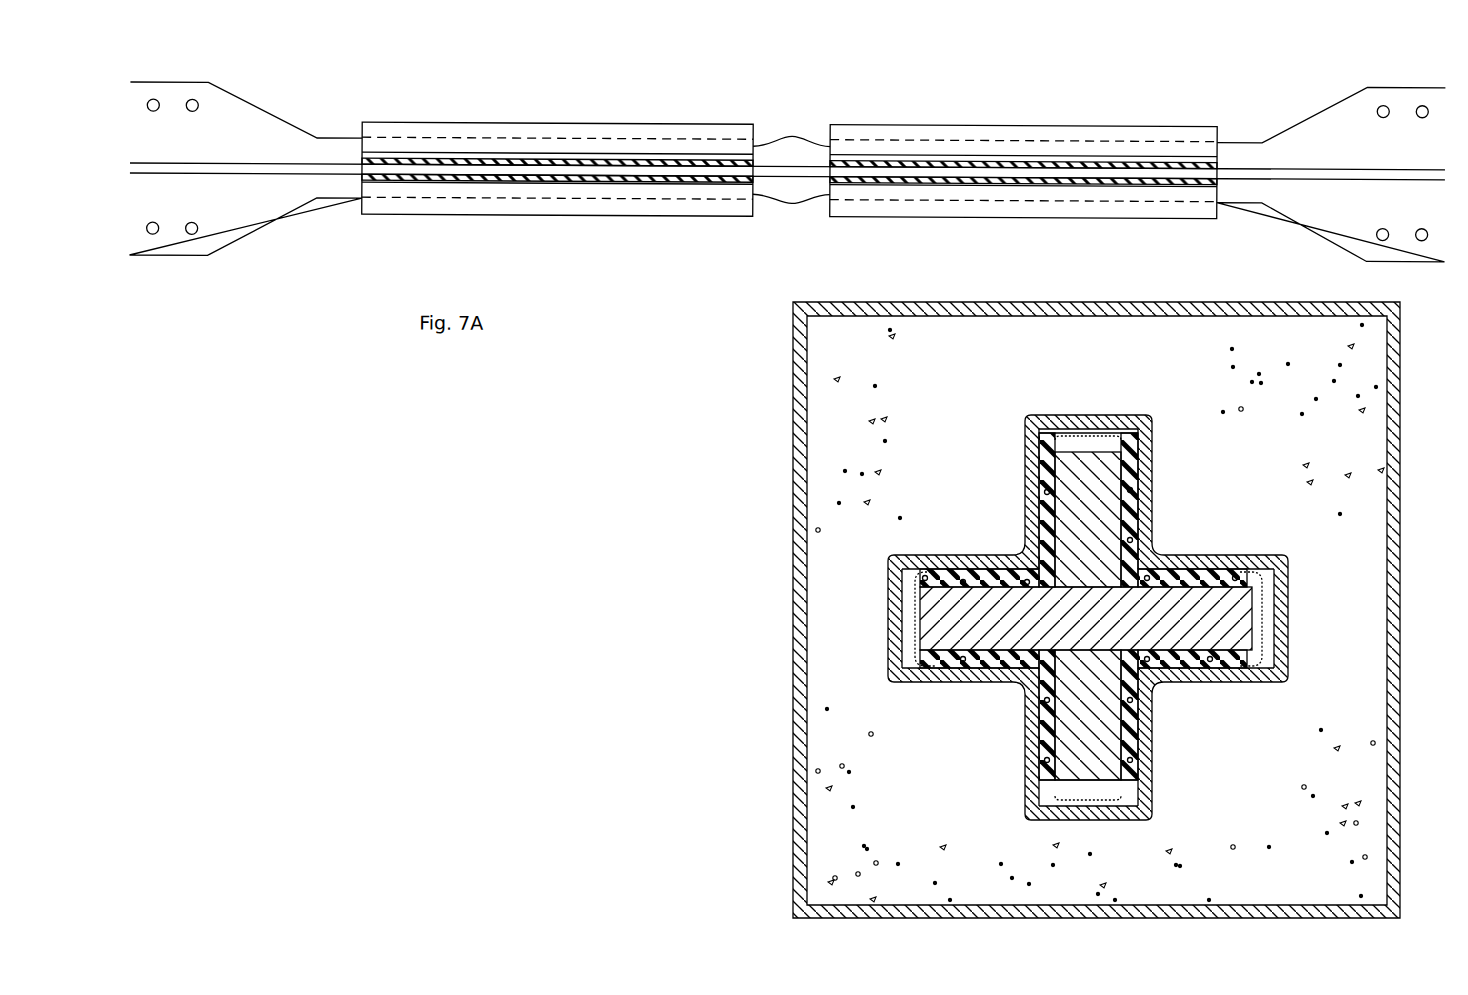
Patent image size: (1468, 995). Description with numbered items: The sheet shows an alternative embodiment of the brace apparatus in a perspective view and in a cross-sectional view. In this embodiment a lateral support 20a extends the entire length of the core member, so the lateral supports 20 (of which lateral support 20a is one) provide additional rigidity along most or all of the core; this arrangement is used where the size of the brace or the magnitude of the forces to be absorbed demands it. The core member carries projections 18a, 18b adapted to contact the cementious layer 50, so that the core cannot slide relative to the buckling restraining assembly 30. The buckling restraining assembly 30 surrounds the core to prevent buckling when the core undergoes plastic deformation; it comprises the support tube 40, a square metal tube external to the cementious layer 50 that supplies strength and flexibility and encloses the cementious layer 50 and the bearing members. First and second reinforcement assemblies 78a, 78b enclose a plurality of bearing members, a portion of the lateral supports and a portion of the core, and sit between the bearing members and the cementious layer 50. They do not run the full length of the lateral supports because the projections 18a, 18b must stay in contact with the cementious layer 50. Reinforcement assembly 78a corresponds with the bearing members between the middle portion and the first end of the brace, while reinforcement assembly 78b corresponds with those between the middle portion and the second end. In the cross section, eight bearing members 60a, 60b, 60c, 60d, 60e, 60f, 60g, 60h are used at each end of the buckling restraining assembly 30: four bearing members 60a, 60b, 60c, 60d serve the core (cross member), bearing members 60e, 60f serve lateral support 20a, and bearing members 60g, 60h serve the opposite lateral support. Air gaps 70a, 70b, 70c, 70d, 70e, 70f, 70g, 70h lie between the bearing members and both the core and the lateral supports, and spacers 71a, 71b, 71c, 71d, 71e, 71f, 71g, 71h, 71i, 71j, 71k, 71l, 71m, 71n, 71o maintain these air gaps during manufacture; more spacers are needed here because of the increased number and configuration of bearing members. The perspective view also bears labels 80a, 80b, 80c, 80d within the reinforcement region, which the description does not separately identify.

In FIG. 7A, the projection 18a is at (793, 133).
In FIG. 7A, the projection 18b is at (790, 199).
In FIG. 7B, the core bar 20 is at (1072, 468).
In FIG. 7A, the lateral support 20a is at (1322, 166).
In FIG. 7B, the buckling restraining assembly 30 is at (775, 372).
In FIG. 7B, the support tube 40 is at (940, 300).
In FIG. 7B, the cementious layer 50 is at (1282, 325).
In FIG. 7A, the bearing member 60a is at (624, 157).
In FIG. 7B, the bearing member 60a is at (922, 560).
In FIG. 7A, the bearing member 60b is at (632, 180).
In FIG. 7B, the bearing member 60b is at (972, 670).
In FIG. 7A, the bearing member 60c is at (1001, 158).
In FIG. 7B, the bearing member 60c is at (1228, 558).
In FIG. 7A, the bearing member 60d is at (1110, 178).
In FIG. 7B, the bearing member 60d is at (1288, 650).
In FIG. 7B, the bearing member 60e is at (1046, 455).
In FIG. 7B, the bearing member 60f is at (1142, 460).
In FIG. 7B, the bearing member 60g is at (1152, 740).
In FIG. 7B, the bearing member 60h is at (1033, 740).
In FIG. 7B, the air gap 70a is at (890, 557).
In FIG. 7B, the air gap 70b is at (888, 678).
In FIG. 7B, the air gap 70c is at (1290, 578).
In FIG. 7B, the air gap 70d is at (1262, 625).
In FIG. 7B, the air gap 70e is at (1046, 458).
In FIG. 7B, the air gap 70f is at (1133, 445).
In FIG. 7B, the air gap 70g is at (1125, 800).
In FIG. 7B, the air gap 70h is at (1045, 810).
In FIG. 7B, the spacer 71a is at (925, 573).
In FIG. 7B, the spacer 71b is at (963, 578).
In FIG. 7B, the spacer 71c is at (1027, 578).
In FIG. 7B, the spacer 71d is at (1045, 492).
In FIG. 7B, the spacer 71e is at (1134, 490).
In FIG. 7B, the spacer 71f is at (1134, 538).
In FIG. 7B, the spacer 71g is at (1149, 574).
In FIG. 7B, the spacer 71h is at (1237, 574).
In FIG. 7B, the spacer 71i is at (1212, 663).
In FIG. 7B, the spacer 71j is at (1150, 663).
In FIG. 7B, the spacer 71k is at (1133, 703).
In FIG. 7B, the spacer 71l is at (1133, 763).
In FIG. 7B, the spacer 71m is at (1044, 764).
In FIG. 7B, the spacer 71n is at (1044, 703).
In FIG. 7B, the spacer 71o is at (963, 663).
In FIG. 7A, the first reinforcement assembly 78a is at (463, 121).
In FIG. 7B, the first reinforcement assembly 78a is at (872, 611).
In FIG. 7A, the second reinforcement assembly 78b is at (1157, 121).
In FIG. 7A, the inner liner 80a is at (385, 150).
In FIG. 7A, the inner liner 80b is at (520, 182).
In FIG. 7A, the inner liner 80c is at (1040, 182).
In FIG. 7A, the inner liner 80d is at (1090, 152).